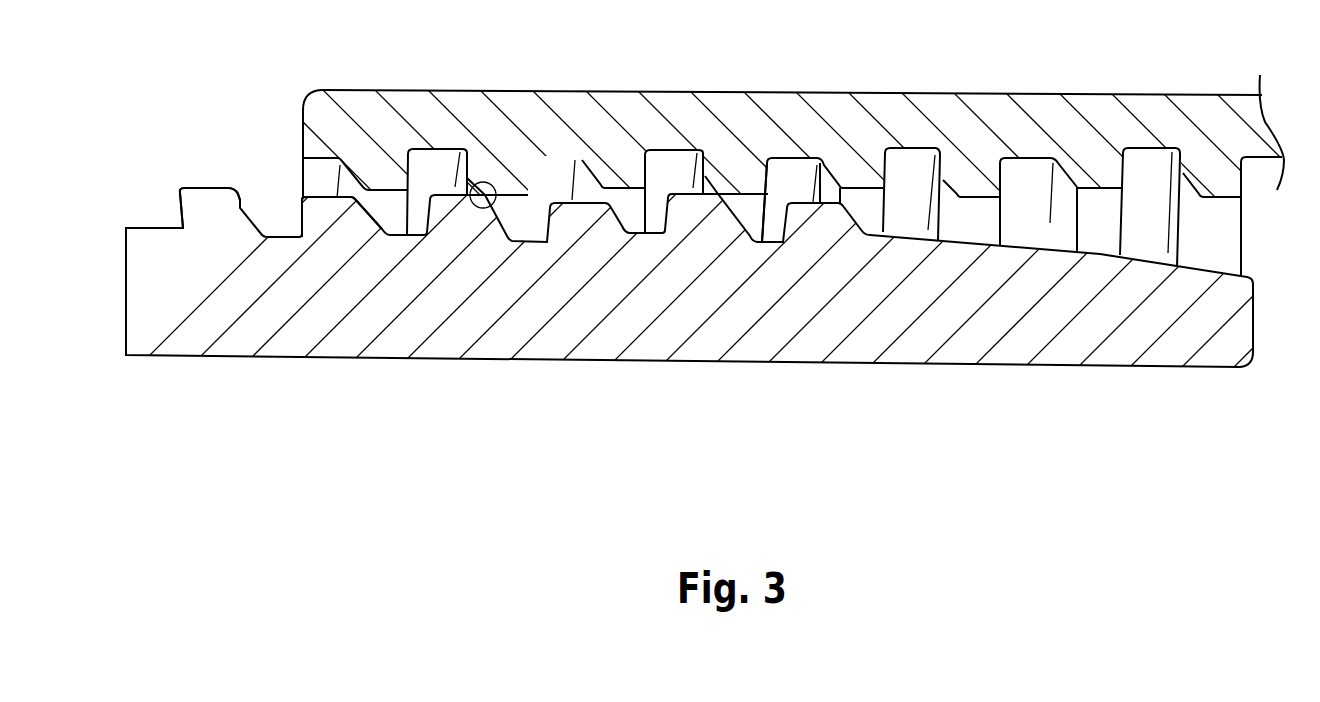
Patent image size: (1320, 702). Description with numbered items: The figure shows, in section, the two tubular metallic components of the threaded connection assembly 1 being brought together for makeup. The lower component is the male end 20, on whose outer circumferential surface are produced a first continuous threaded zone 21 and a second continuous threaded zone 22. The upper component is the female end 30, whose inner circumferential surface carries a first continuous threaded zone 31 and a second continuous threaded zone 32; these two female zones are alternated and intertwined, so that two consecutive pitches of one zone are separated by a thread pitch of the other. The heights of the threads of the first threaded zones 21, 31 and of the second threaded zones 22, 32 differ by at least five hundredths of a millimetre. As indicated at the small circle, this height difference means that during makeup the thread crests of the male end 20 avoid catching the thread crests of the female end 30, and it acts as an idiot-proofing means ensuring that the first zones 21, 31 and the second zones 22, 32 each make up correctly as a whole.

The connection assembly 1 is at (712, 220).
The male end 20 is at (712, 287).
The first continuous threaded zone 21 is at (335, 206).
The second continuous threaded zone 22 is at (215, 190).
The female end 30 is at (754, 143).
The first continuous threaded zone 31 is at (619, 191).
The second continuous threaded zone 32 is at (739, 193).